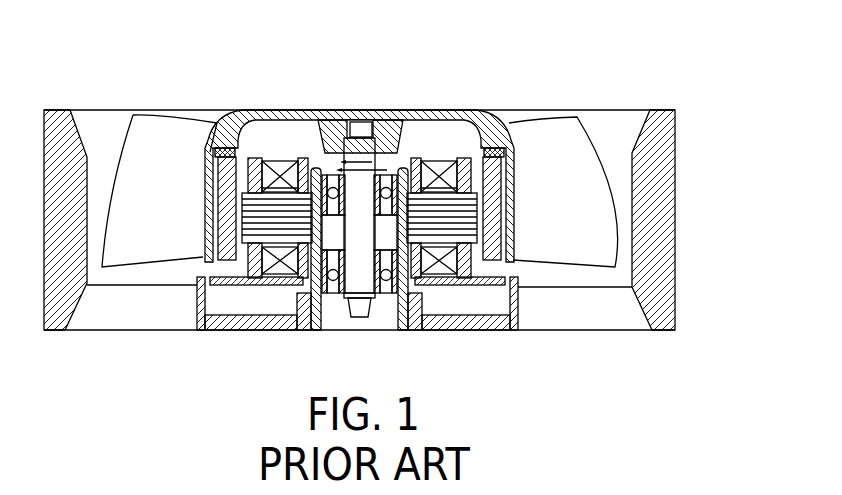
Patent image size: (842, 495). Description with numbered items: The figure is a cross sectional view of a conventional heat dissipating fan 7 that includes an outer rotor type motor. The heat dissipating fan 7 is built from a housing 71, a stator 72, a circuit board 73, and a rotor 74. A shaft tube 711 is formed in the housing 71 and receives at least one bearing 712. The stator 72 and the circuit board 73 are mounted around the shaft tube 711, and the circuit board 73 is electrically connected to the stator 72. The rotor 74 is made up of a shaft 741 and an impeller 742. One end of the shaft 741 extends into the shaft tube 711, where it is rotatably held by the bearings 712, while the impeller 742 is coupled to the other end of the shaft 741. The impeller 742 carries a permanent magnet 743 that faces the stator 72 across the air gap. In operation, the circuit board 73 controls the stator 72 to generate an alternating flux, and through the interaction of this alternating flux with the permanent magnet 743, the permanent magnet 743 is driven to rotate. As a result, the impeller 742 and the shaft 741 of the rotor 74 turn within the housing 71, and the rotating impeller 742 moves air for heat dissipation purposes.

The heat dissipating fan 7 is at (686, 90).
The housing 71 is at (662, 115).
The shaft tube 711 is at (413, 275).
The bearing 712 is at (327, 303).
The stator 72 is at (463, 146).
The circuit board 73 is at (500, 285).
The rotor 74 is at (256, 105).
The shaft 741 is at (363, 282).
The impeller 742 is at (137, 130).
The permanent magnet 743 is at (210, 148).